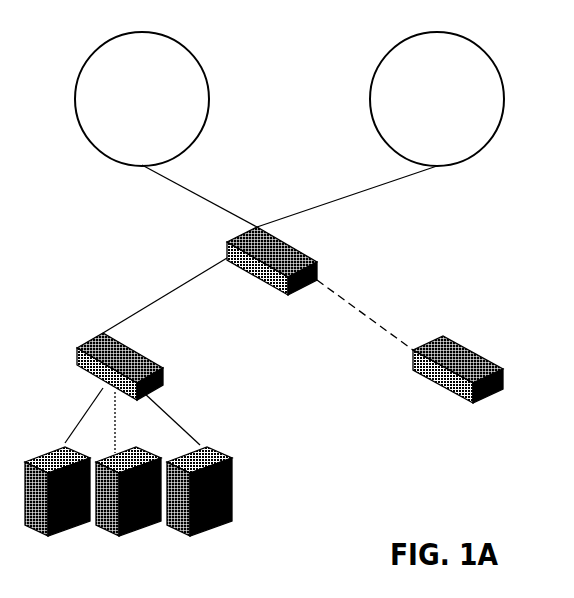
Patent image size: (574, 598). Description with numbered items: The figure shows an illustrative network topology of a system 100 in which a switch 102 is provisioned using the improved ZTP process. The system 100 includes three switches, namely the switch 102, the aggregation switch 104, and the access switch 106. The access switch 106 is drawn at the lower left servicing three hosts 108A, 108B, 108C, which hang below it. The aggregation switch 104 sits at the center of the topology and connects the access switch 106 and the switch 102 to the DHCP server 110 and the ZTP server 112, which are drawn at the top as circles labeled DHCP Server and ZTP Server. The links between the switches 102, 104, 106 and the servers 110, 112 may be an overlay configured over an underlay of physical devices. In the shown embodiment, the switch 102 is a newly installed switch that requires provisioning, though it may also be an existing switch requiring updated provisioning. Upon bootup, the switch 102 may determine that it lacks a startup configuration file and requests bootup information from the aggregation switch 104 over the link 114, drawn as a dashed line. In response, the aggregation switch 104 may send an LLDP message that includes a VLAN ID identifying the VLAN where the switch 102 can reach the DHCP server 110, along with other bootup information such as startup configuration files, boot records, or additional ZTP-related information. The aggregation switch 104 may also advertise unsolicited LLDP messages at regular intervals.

The system 100 is at (245, 25).
The switch 102 is at (503, 382).
The aggregation switch 104 is at (288, 296).
The access switch 106 is at (79, 370).
The host 108A is at (50, 537).
The host 108B is at (121, 537).
The host 108C is at (192, 537).
The DHCP server 110 is at (73, 99).
The ZTP server 112 is at (506, 99).
The link 114 is at (377, 322).